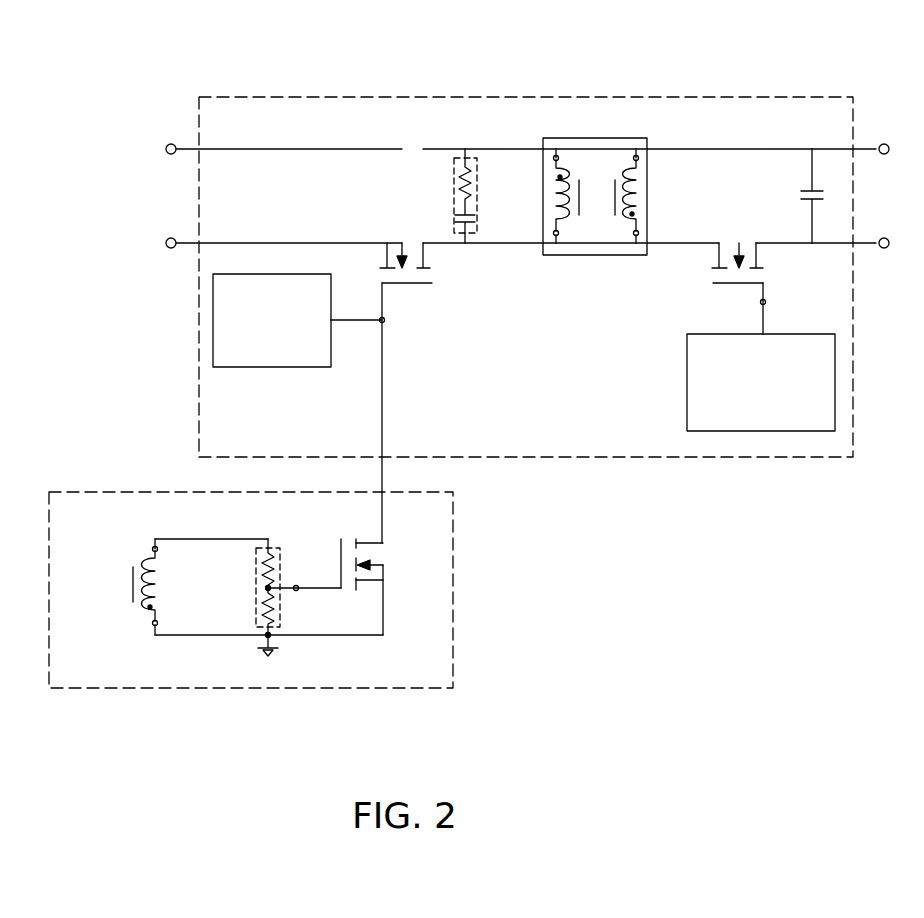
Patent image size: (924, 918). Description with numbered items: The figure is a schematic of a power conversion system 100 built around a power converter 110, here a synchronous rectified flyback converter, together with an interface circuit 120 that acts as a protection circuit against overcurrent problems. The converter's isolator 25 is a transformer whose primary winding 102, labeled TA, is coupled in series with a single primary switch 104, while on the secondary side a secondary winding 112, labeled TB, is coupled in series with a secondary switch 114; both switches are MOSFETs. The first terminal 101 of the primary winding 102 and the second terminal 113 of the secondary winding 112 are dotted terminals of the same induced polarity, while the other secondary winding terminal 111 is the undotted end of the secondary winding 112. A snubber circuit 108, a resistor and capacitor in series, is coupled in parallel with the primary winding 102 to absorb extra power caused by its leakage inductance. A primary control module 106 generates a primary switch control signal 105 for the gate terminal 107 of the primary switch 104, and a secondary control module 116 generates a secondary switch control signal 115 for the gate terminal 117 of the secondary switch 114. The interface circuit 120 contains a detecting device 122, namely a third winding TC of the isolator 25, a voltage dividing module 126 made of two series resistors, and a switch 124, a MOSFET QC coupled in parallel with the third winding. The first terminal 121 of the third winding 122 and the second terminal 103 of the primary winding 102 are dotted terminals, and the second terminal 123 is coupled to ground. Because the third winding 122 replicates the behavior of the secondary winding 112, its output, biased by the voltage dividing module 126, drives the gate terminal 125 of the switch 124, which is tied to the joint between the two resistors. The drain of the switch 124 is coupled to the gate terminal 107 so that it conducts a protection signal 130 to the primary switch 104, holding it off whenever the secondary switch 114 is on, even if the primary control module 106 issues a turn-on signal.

The power conversion system 100 is at (243, 74).
The power converter 110 is at (603, 97).
The isolator 25 is at (608, 138).
The first terminal of the primary winding 101 is at (555, 163).
The primary winding 102 is at (555, 240).
The second terminal of the primary winding 103 is at (555, 233).
The primary switch 104 is at (430, 254).
The primary switch control signal 105 is at (347, 324).
The primary control module 106 is at (287, 368).
The gate terminal of the primary switch 107 is at (385, 320).
The snubber circuit 108 is at (456, 176).
The first terminal of secondary winding 111 is at (639, 160).
The secondary winding 112 is at (635, 240).
The second terminal of the secondary winding 113 is at (639, 235).
The secondary switch 114 is at (757, 252).
The secondary switch control signal 115 is at (761, 316).
The secondary control module 116 is at (686, 378).
The gate terminal of the secondary switch 117 is at (766, 302).
The protection signal 130 is at (383, 410).
The interface circuit 120 is at (454, 576).
The first terminal of the third winding 121 is at (159, 550).
The detecting device 122 is at (140, 608).
The second terminal of the third winding 123 is at (159, 622).
The switch 124 is at (384, 578).
The gate terminal of the switch 125 is at (298, 590).
The voltage dividing module 126 is at (282, 558).